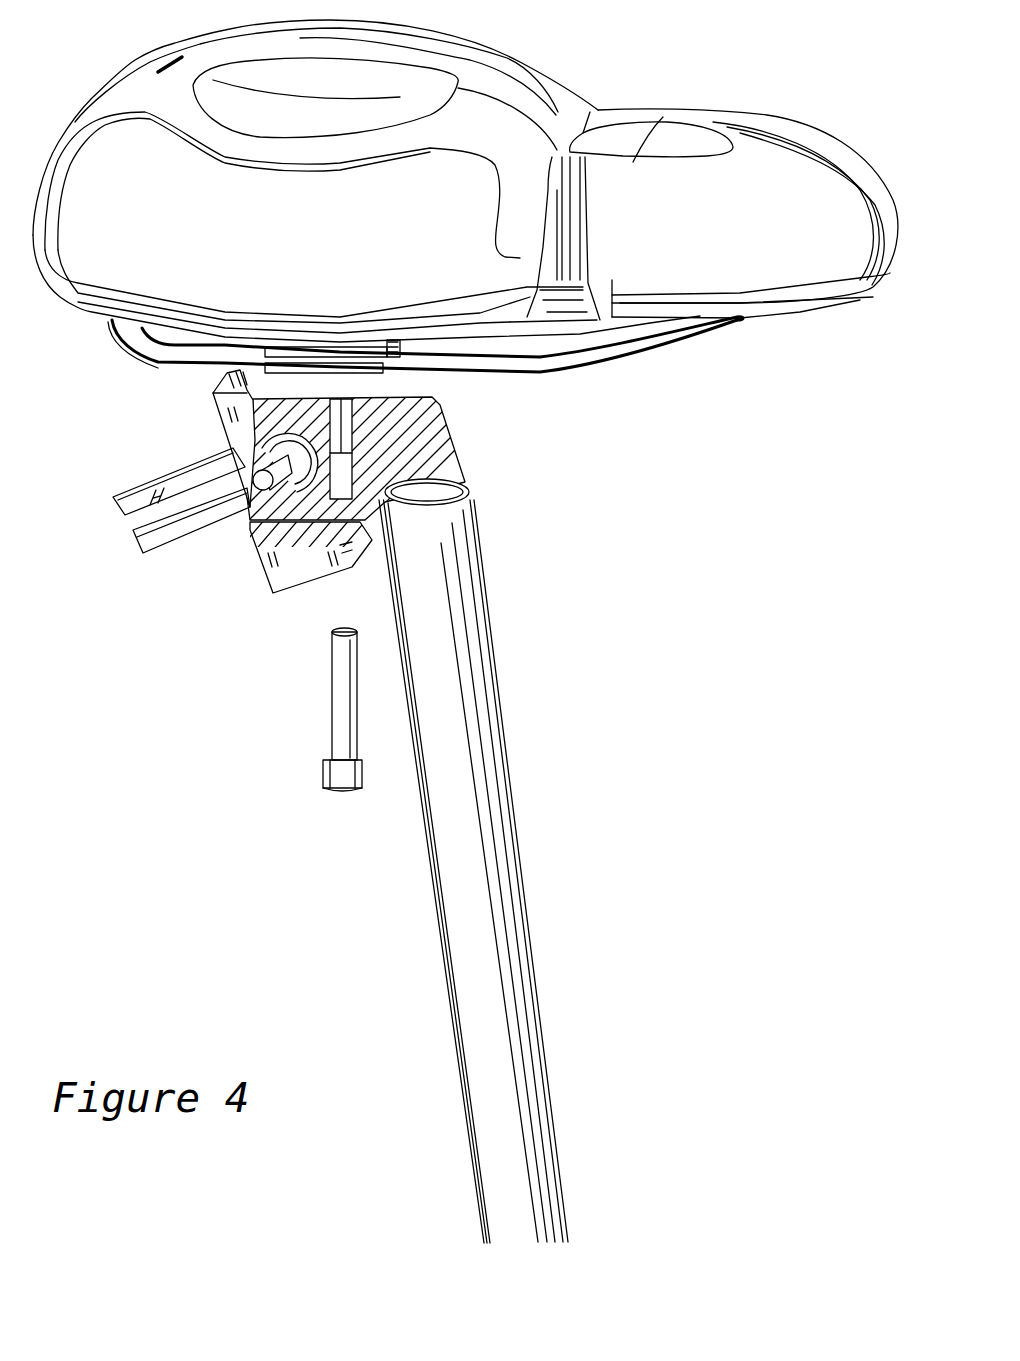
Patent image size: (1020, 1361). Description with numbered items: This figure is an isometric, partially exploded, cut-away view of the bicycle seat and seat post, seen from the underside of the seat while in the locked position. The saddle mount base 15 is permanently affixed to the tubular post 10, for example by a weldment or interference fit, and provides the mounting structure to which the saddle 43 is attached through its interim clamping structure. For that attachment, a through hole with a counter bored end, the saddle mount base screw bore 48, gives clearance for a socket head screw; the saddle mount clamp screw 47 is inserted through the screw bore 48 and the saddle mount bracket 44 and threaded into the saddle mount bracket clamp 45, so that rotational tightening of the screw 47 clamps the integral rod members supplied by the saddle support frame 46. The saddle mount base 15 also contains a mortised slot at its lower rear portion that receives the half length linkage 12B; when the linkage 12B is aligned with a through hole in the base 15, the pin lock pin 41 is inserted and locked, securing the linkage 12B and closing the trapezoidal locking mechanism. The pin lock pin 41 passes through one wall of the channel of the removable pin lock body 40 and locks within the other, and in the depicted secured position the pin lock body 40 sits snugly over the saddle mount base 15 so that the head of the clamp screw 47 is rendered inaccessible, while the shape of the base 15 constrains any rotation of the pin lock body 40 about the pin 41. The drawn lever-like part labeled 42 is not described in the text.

The tubular post 10 is at (440, 635).
The half length linkage 12B is at (157, 538).
The saddle mount base 15 is at (450, 450).
The pin lock body 40 is at (283, 572).
The pin lock pin 41 is at (277, 493).
The lever 42 is at (255, 437).
The saddle 43 is at (547, 62).
The saddle mount bracket 44 is at (430, 383).
The saddle mount bracket clamp 45 is at (450, 350).
The saddle support frame 46 is at (640, 367).
The saddle mount clamp screw 47 is at (340, 728).
The saddle mount base screw bore 48 is at (368, 540).